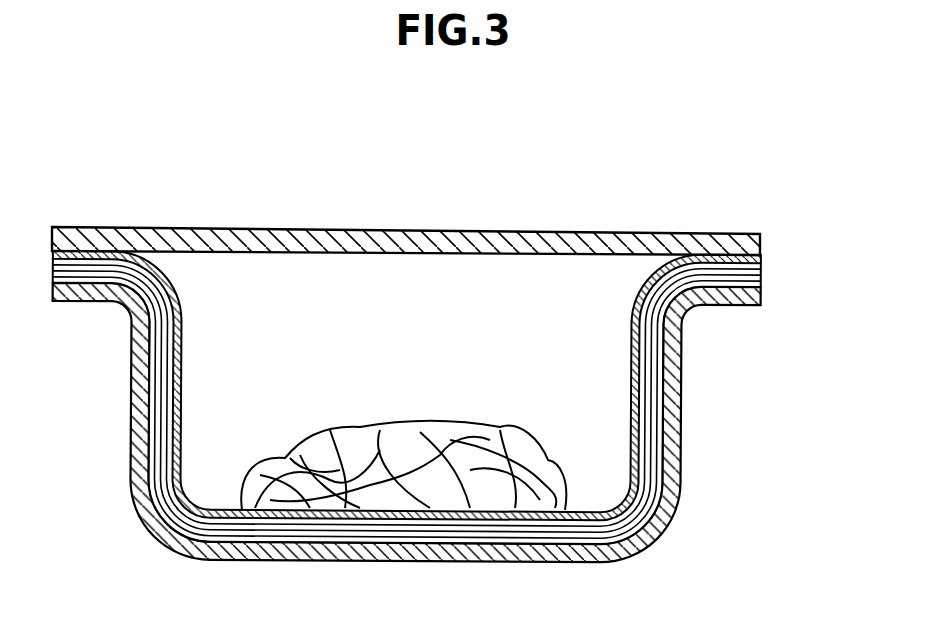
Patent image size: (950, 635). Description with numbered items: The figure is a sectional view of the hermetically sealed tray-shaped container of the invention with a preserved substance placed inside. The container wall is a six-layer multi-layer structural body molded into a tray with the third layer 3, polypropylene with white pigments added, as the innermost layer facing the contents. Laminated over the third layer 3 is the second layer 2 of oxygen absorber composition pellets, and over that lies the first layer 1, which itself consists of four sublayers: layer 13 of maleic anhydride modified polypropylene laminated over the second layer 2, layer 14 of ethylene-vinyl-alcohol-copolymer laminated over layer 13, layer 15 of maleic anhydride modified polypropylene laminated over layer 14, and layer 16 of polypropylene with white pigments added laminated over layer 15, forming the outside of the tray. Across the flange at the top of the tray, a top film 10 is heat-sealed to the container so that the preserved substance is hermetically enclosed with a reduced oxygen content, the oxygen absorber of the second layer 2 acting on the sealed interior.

The top film 10 is at (741, 243).
The third layer 3 is at (763, 257).
The second layer 2 is at (763, 263).
The layer of maleic anhydride modified polypropylene 13 is at (763, 270).
The layer of ethylene-vinyl-alcohol-copolymer 14 is at (763, 277).
The layer of maleic anhydride modified polypropylene 15 is at (763, 282).
The layer of polypropylene with white pigments added 16 is at (838, 272).
The first layer 1 is at (460, 388).